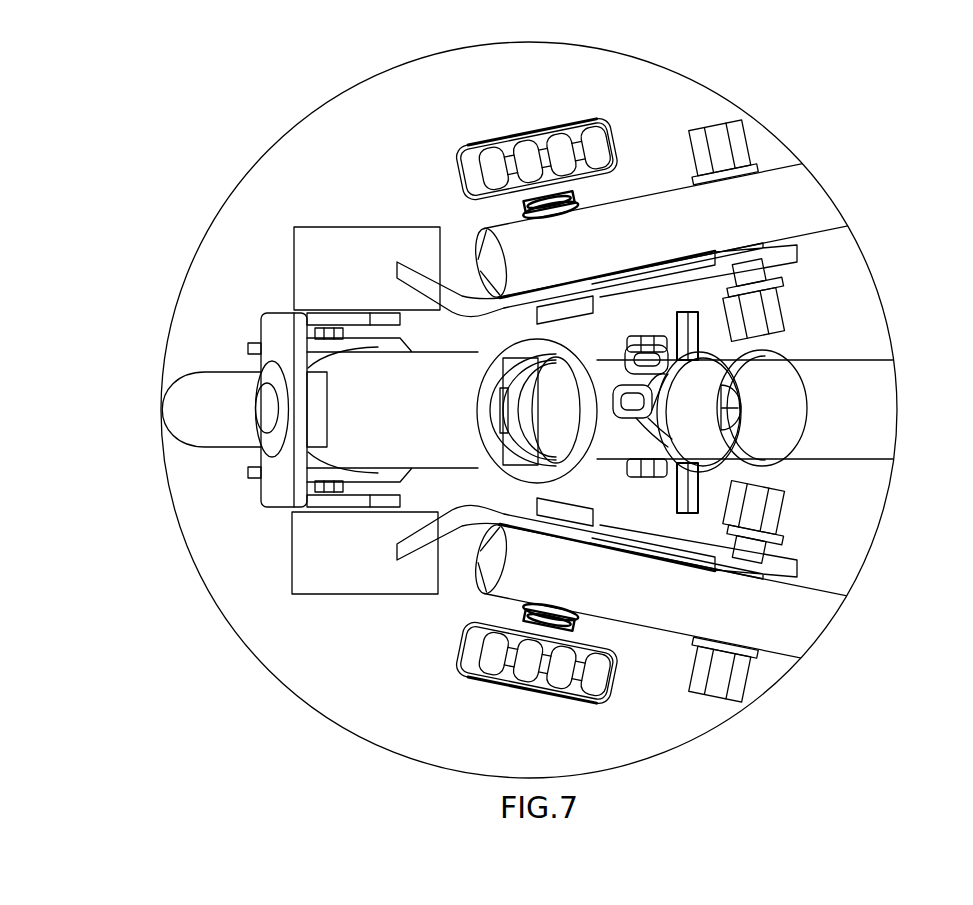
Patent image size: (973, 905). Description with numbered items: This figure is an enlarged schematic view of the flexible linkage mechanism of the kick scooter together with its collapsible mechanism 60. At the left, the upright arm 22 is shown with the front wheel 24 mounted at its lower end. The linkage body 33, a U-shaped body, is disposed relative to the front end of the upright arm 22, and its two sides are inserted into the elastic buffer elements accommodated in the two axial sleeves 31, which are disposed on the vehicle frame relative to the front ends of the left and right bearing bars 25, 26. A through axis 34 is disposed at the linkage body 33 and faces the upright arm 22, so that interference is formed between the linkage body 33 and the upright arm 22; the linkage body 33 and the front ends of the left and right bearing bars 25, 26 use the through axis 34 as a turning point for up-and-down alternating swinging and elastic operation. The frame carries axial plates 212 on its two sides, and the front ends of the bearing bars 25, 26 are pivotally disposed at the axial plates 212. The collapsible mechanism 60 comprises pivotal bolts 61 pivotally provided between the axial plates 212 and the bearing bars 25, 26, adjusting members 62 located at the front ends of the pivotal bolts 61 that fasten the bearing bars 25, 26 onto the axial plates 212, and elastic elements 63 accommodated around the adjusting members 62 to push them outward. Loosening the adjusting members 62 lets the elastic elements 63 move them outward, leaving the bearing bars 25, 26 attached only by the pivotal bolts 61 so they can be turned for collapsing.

The collapsible mechanism 60 is at (460, 103).
The pivotal bolt 61 is at (745, 143).
The adjusting member 62 is at (560, 140).
The elastic element 63 is at (590, 210).
The right bearing bar 26 is at (805, 205).
The left bearing bar 25 is at (773, 628).
The axial plate 212 is at (780, 257).
The axial sleeve 31 is at (358, 250).
The upright arm 22 is at (412, 370).
The linkage body 33 is at (277, 347).
The front wheel 24 is at (200, 417).
The through axis 34 is at (323, 402).